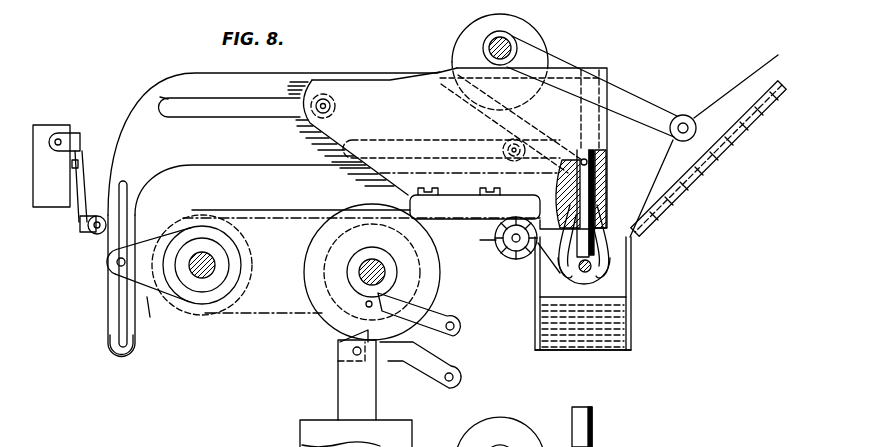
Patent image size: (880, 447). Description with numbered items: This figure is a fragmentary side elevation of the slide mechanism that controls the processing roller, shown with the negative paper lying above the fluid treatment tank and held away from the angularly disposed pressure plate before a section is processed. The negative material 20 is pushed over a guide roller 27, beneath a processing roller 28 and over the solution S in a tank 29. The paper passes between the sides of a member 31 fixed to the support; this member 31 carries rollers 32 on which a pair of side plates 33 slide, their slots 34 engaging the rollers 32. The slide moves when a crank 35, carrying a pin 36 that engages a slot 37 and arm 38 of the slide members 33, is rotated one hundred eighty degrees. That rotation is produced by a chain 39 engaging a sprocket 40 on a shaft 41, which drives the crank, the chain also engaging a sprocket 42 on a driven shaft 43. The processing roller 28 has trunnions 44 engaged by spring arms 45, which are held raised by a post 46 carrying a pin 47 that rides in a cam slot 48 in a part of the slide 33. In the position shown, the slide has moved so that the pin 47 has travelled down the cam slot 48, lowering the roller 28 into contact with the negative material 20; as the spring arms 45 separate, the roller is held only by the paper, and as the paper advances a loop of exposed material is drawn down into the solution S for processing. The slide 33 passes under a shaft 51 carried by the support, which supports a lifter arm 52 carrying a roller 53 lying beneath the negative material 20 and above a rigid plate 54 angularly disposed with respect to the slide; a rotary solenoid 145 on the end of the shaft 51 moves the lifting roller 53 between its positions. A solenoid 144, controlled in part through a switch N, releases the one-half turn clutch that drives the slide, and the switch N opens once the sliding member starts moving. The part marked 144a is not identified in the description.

The negative material 20 is at (724, 89).
The guide roller 27 is at (494, 239).
The processing roller 28 is at (620, 292).
The tank 29 is at (631, 350).
The solution S is at (630, 326).
The member 31 is at (388, 83).
The rollers 32 is at (326, 94).
The side plates 33 is at (193, 78).
The slots 34 is at (163, 96).
The crank 35 is at (150, 317).
The pin 36 is at (112, 264).
The slot 37 is at (116, 316).
The arm 38 is at (108, 348).
The chain 39 is at (255, 315).
The sprocket 40 is at (246, 278).
The shaft 41 is at (218, 262).
The sprocket 42 is at (326, 296).
The shaft 43 is at (358, 272).
The trunnions 44 is at (578, 278).
The spring arms 45 is at (601, 232).
The post 46 is at (553, 201).
The pin 47 is at (576, 152).
The cam slot 48 is at (471, 100).
The shaft 51 is at (513, 42).
The lifter arm 52 is at (620, 89).
The roller 53 is at (697, 124).
The rigid plate 54 is at (718, 150).
The solenoid 144 is at (310, 420).
The link 144a is at (389, 364).
The rotary solenoid 145 is at (458, 30).
The switch N is at (55, 203).